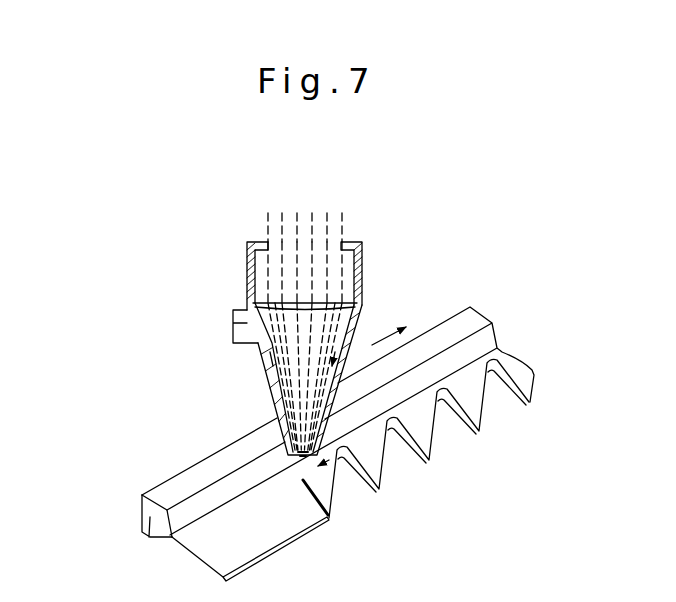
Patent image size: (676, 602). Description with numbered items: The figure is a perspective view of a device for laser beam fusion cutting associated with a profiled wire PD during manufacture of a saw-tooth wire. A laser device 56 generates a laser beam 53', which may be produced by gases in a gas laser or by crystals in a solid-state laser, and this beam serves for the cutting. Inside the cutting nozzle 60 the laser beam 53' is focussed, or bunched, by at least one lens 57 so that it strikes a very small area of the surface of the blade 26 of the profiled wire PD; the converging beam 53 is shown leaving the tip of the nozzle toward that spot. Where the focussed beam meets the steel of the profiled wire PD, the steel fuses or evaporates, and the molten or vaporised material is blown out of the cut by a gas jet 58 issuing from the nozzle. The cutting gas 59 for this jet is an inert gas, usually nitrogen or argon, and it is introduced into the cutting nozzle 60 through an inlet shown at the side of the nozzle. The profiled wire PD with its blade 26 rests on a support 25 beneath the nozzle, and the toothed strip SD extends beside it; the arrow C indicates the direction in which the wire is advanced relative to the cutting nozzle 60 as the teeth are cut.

The laser beam 53' is at (273, 226).
The laser device 56 is at (357, 221).
The cutting nozzle 60 is at (247, 258).
The lens 57 is at (247, 293).
The cutting gas 59 is at (245, 330).
The gas jet 58 is at (292, 465).
The focused laser beam 53 is at (202, 402).
The strip (stamped strip with teeth) SD is at (422, 332).
The feed direction C is at (383, 333).
The profiled wire PD is at (187, 467).
The support block 25 is at (143, 540).
The blade 26 is at (243, 542).